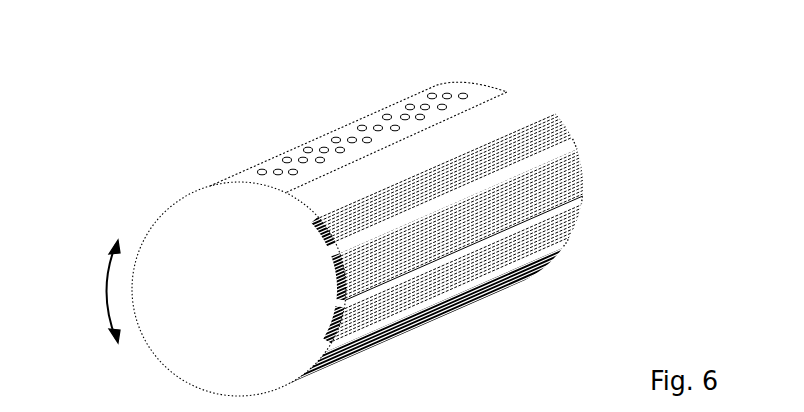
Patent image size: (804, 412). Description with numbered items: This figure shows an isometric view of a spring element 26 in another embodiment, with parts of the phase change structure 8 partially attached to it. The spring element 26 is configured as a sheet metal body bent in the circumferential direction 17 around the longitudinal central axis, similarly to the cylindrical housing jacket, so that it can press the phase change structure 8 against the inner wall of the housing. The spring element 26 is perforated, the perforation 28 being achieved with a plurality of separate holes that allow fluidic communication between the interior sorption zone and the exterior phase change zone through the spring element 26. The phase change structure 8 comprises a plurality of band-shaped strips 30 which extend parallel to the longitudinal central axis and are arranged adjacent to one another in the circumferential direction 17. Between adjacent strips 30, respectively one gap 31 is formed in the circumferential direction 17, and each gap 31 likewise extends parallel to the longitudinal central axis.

The spring element 26 is at (680, 127).
The perforation 28 is at (337, 138).
The phase change structure 8 is at (577, 220).
The band-shaped strips 30 is at (342, 260).
The gap 31 is at (355, 300).
The circumferential direction 17 is at (106, 291).